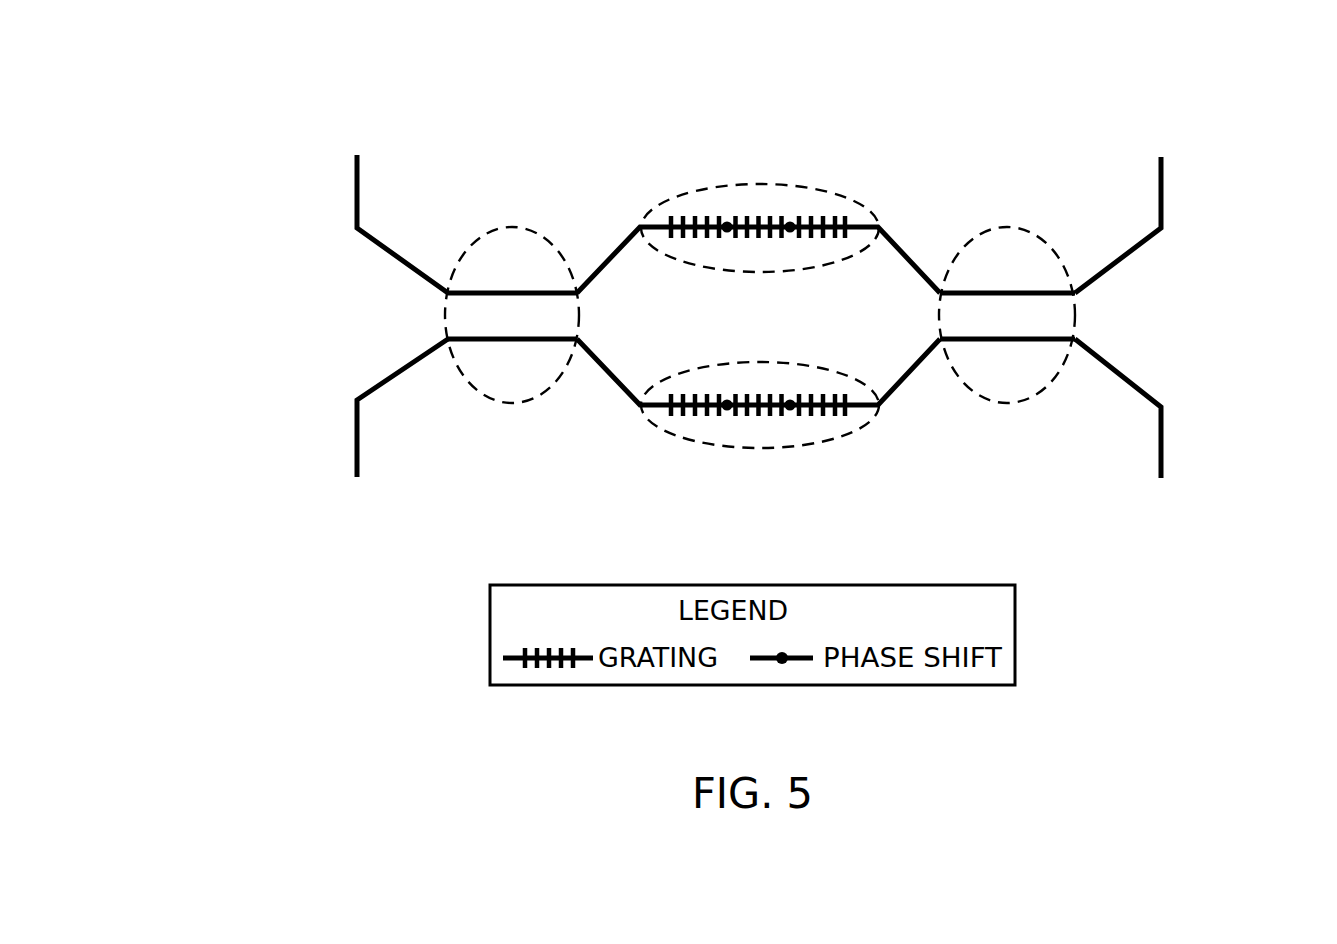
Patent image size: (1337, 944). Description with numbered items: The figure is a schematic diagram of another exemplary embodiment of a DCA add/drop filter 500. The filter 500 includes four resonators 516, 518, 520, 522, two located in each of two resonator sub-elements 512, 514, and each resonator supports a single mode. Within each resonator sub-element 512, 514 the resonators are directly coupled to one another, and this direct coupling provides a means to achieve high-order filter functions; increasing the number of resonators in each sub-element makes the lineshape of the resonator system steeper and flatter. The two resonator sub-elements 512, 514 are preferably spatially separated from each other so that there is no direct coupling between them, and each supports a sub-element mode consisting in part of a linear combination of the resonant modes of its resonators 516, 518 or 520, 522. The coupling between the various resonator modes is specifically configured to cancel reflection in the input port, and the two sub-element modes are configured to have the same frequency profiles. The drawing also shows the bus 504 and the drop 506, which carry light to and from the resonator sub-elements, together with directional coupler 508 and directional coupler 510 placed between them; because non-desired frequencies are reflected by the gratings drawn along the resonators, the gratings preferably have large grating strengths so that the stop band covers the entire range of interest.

The DCA add/drop filter 500 is at (993, 50).
The bus waveguide 504 is at (382, 262).
The drop waveguide 506 is at (1137, 255).
The directional coupler 1 508 is at (513, 403).
The directional coupler 2 510 is at (1005, 403).
The resonator sub-element 512 is at (758, 204).
The resonator sub-element 514 is at (758, 409).
The resonator 516 is at (725, 234).
The resonator 518 is at (792, 234).
The resonator 520 is at (725, 398).
The resonator 522 is at (792, 398).